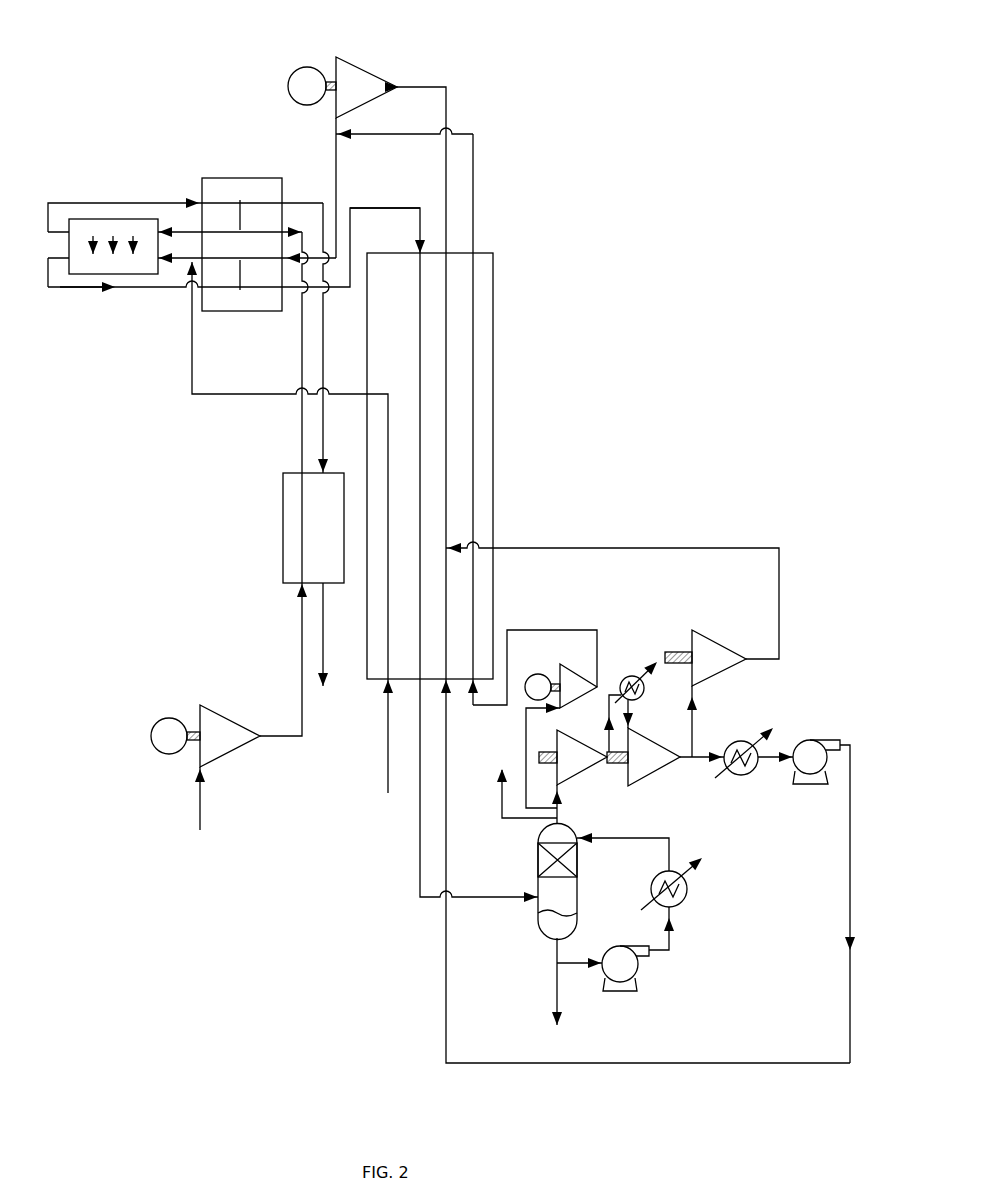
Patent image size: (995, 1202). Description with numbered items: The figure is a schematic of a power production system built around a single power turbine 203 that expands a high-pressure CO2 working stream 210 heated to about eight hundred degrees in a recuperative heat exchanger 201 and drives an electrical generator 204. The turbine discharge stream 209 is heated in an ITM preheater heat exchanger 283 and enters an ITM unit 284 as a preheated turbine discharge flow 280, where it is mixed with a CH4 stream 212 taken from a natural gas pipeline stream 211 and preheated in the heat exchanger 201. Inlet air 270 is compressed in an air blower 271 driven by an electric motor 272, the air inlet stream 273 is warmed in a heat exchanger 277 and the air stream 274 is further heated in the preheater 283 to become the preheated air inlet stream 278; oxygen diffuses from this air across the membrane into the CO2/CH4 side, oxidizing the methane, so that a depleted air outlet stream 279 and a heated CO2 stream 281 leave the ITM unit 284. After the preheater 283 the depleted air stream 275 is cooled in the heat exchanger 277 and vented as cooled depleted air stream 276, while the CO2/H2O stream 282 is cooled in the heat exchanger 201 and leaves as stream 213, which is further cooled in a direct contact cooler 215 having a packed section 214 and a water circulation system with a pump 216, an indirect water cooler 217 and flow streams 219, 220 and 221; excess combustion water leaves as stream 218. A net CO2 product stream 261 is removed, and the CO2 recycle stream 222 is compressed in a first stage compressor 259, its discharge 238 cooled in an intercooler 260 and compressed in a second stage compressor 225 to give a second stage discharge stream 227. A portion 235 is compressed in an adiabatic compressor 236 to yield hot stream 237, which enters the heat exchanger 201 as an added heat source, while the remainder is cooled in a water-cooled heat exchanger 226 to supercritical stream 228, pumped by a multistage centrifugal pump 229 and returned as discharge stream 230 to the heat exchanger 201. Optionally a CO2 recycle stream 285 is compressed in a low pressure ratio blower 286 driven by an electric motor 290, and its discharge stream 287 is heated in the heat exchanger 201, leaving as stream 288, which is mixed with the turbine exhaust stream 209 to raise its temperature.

The recuperative heat exchanger 201 is at (496, 288).
The power turbine 203 is at (363, 63).
The electrical generator 204 is at (288, 86).
The CO2 turbine discharge stream 209 is at (336, 141).
The total CO2 recycle stream 210 is at (446, 82).
The natural gas pipeline stream 211 is at (388, 736).
The CH4 stream 212 is at (190, 360).
The cooled CO2/H2O stream 213 is at (418, 835).
The packed section 214 is at (545, 864).
The direct contact cooler 215 is at (545, 894).
The pump 216 is at (640, 967).
The indirect water cooler 217 is at (690, 889).
The water stream 218 is at (555, 991).
The water flow stream 219 is at (570, 966).
The water flow stream 220 is at (672, 941).
The water flow stream 221 is at (633, 840).
The CO2 recycle stream 222 is at (560, 807).
The second stage compressor 225 is at (655, 792).
The water-cooled heat exchanger 226 is at (741, 777).
The second stage discharge stream 227 is at (687, 762).
The high-density supercritical CO2 stream 228 is at (762, 772).
The multistage centrifugal pump 229 is at (810, 739).
The pump discharge stream 230 is at (848, 851).
The portion of second-stage discharge stream 235 is at (692, 722).
The adiabatic compressor 236 is at (718, 645).
The hot CO2 compressor discharge stream 237 is at (633, 546).
The first stage compressor discharge stream 238 is at (638, 674).
The first stage compressor 259 is at (576, 778).
The intercooler 260 is at (632, 706).
The net CO2 product stream 261 is at (502, 799).
The inlet air stream 270 is at (198, 797).
The air blower 271 is at (245, 722).
The electric motor 272 is at (170, 717).
The air inlet stream 273 is at (302, 653).
The air stream 274 is at (302, 453).
The depleted air stream 275 is at (323, 433).
The cooled depleted air stream 276 is at (323, 628).
The heat exchanger 277 is at (283, 529).
The preheated air inlet stream 278 is at (234, 234).
The depleted air outlet stream 279 is at (143, 201).
The preheated turbine discharge flow 280 is at (242, 258).
The heated CO2 stream 281 is at (106, 290).
The CO2/H2O stream 282 is at (409, 203).
The ITM preheater heat exchanger 283 is at (236, 178).
The ITM unit 284 is at (69, 250).
The CO2 recycle stream 285 is at (526, 754).
The low pressure ratio blower 286 is at (585, 656).
The blower discharge stream 287 is at (518, 628).
The heated blower discharge stream 288 is at (403, 138).
The electric motor 290 is at (541, 673).